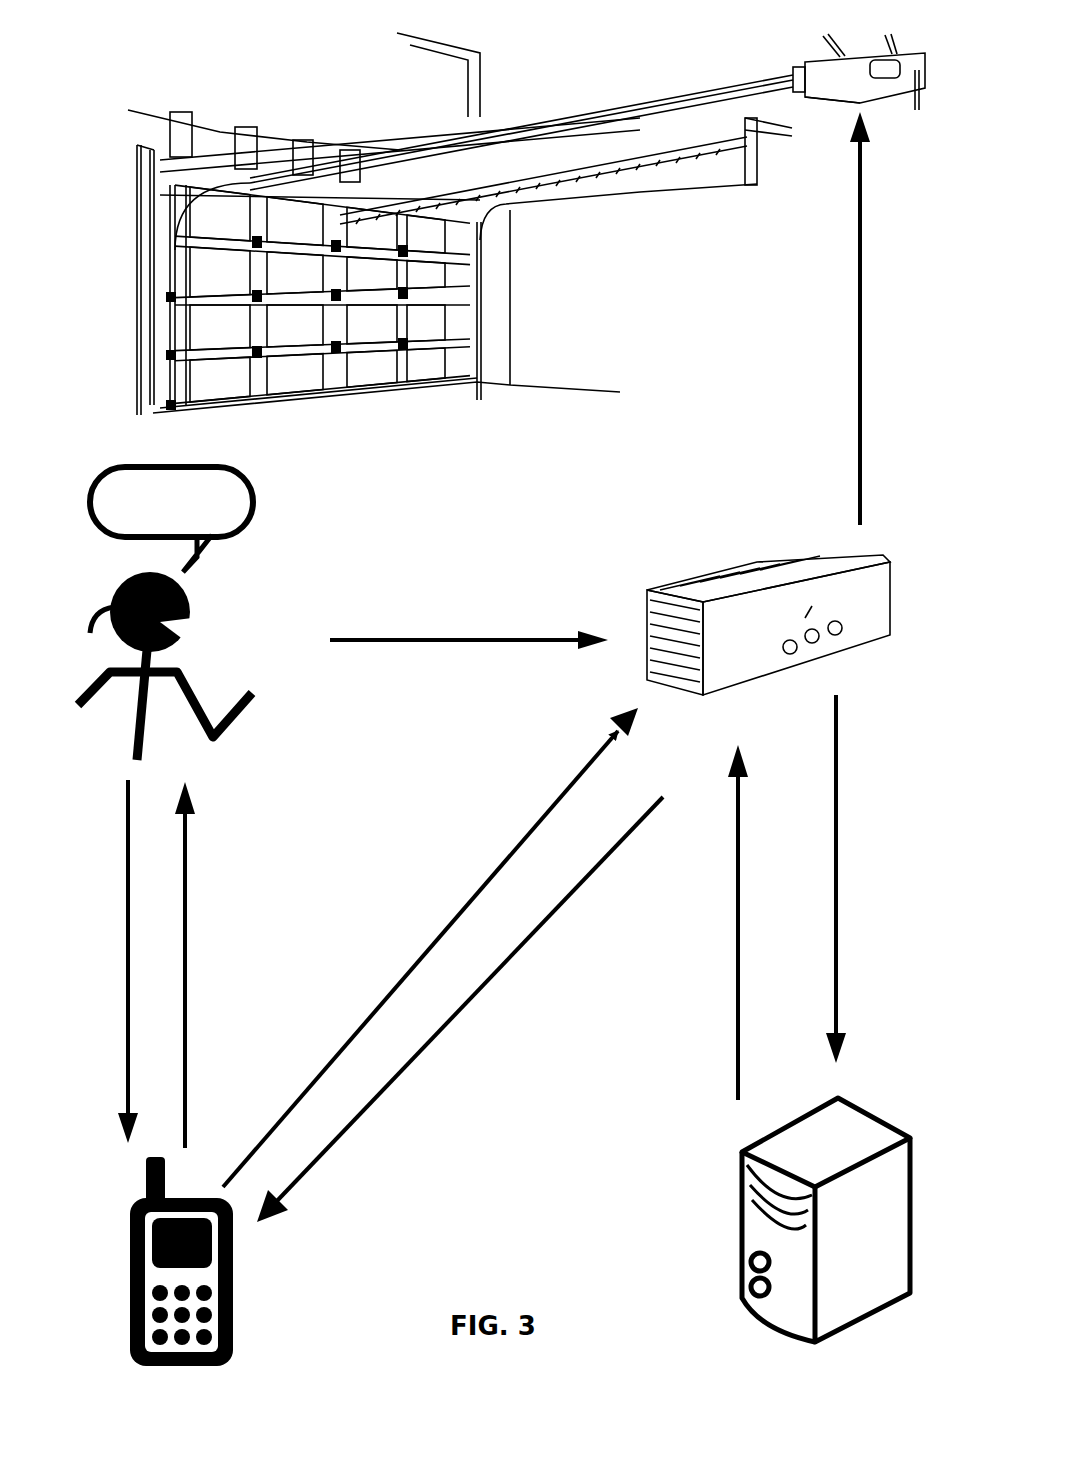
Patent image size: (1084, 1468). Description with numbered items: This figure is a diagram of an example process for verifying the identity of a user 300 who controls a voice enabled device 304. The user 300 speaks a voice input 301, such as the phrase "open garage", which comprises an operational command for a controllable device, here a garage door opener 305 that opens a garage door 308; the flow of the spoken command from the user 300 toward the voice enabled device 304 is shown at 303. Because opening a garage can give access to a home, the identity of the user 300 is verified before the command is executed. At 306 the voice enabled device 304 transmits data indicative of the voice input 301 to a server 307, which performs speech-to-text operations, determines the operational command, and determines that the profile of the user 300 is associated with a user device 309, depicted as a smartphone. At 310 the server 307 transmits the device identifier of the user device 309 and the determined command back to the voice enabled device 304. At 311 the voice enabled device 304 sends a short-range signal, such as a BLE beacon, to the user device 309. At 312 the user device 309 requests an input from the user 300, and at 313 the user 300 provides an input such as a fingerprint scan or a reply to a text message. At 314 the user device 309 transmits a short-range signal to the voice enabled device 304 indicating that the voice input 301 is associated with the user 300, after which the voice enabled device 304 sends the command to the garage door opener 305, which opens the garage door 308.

The user 300 is at (156, 666).
The voice input 301 is at (189, 521).
The voice command transmission to voice assistant device 303 is at (447, 639).
The voice enabled device 304 is at (768, 654).
The garage door opener 305 is at (859, 89).
The transmission of voice input data to server 306 is at (837, 935).
The server 307 is at (884, 1246).
The garage door 308 is at (316, 284).
The user device 309 is at (233, 1305).
The transmission of device identifier and command to voice enabled device 310 is at (737, 1040).
The short-range signal from voice enabled device to user device 311 is at (562, 905).
The input request from user device to user 312 is at (186, 905).
The user input to user device 313 is at (127, 865).
The short-range signal from user device to voice enabled device 314 is at (466, 906).